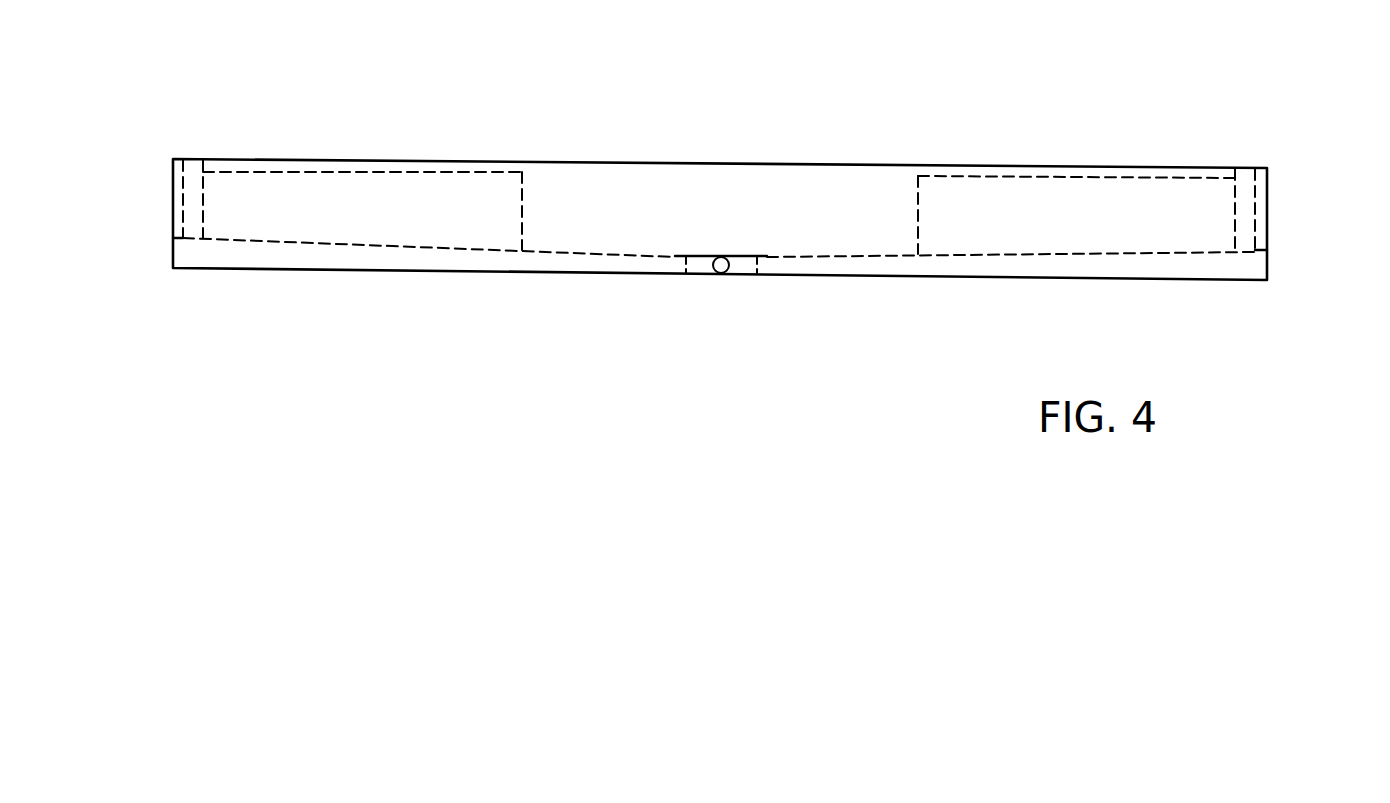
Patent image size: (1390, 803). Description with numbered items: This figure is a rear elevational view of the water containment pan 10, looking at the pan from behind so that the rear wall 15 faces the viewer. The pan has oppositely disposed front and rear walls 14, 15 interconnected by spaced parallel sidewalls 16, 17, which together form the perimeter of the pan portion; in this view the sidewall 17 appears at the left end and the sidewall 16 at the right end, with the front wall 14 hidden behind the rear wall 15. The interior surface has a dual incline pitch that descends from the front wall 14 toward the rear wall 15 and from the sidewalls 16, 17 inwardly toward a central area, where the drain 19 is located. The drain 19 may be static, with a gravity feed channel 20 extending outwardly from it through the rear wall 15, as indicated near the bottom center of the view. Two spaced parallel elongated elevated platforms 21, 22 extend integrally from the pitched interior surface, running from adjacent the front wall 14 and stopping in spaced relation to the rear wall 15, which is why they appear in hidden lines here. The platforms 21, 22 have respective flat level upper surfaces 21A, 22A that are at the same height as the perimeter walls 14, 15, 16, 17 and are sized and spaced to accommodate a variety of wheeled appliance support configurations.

The water containment pan 10 is at (1250, 104).
The front wall 14 is at (575, 187).
The rear wall 15 is at (372, 230).
The sidewall 16 is at (1267, 213).
The sidewall 17 is at (173, 214).
The drain 19 is at (745, 263).
The gravity feed channel 20 is at (713, 268).
The elevated platform 21 is at (1007, 193).
The flat level upper surface 21A is at (975, 179).
The elevated platform 22 is at (315, 188).
The flat level upper surface 22A is at (387, 174).